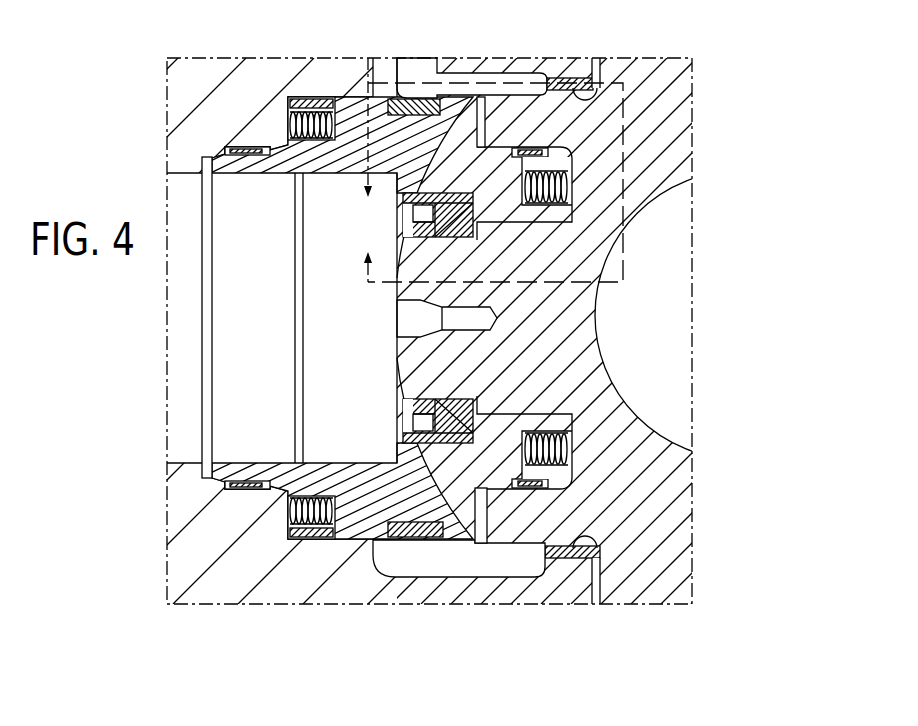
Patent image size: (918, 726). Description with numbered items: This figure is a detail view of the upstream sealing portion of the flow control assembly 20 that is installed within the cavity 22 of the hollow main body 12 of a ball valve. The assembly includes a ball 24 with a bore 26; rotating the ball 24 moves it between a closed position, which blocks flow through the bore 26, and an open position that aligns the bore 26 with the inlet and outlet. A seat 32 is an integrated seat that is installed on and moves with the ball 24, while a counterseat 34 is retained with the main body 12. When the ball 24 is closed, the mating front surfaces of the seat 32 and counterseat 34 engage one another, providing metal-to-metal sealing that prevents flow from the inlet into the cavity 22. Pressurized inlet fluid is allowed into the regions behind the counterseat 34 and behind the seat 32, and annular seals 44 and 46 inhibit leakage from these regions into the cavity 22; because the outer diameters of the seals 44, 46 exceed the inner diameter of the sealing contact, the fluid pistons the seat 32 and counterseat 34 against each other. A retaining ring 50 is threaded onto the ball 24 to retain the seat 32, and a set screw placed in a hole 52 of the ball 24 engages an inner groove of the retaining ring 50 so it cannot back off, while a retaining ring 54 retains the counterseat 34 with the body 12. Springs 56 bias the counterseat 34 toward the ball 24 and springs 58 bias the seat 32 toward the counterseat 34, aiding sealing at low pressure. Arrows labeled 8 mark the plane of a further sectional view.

The section line 8- 8 is at (483, 170).
The main body 12 is at (190, 545).
The flow control assembly 20 is at (476, 546).
The cavity 22 is at (425, 556).
The ball 24 is at (682, 123).
The bore 26 is at (643, 423).
The seat 32 is at (425, 457).
The counterseat 34 is at (342, 468).
The annular seal 44 is at (250, 157).
The annular seal 46 is at (527, 150).
The retaining ring 50 is at (412, 420).
The hole 52 is at (428, 370).
The retaining ring 54 is at (423, 108).
The springs 56 is at (312, 123).
The springs 58 is at (556, 192).